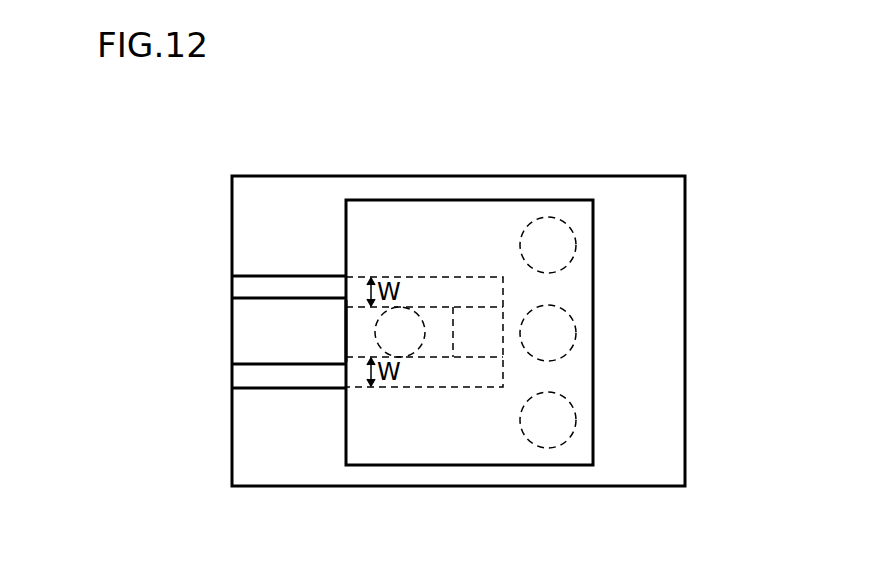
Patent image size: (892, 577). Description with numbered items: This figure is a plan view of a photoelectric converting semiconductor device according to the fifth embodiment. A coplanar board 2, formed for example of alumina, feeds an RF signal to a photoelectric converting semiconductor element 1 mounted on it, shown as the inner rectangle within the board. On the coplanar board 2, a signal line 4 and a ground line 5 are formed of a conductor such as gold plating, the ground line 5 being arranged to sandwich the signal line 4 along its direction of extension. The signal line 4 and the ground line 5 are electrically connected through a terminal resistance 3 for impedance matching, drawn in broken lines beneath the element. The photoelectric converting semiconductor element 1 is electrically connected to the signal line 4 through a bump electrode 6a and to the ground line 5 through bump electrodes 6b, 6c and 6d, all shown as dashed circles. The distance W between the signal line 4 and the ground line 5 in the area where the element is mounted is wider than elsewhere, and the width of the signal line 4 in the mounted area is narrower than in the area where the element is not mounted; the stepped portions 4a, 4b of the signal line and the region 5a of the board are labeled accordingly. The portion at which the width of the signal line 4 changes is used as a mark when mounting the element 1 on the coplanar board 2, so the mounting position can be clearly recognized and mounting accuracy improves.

The photoelectric converting semiconductor element 1 is at (372, 200).
The coplanar board 2 is at (658, 209).
The terminal resistance 3 is at (478, 340).
The signal line 4 is at (272, 333).
The wiring portion 4a is at (438, 335).
The wiring portion 4b is at (340, 332).
The ground line 5 is at (272, 230).
The chip surface region 5a is at (445, 232).
The bump electrode 6a is at (400, 332).
The bump electrode 6b is at (548, 245).
The bump electrode 6c is at (548, 333).
The bump electrode 6d is at (548, 421).